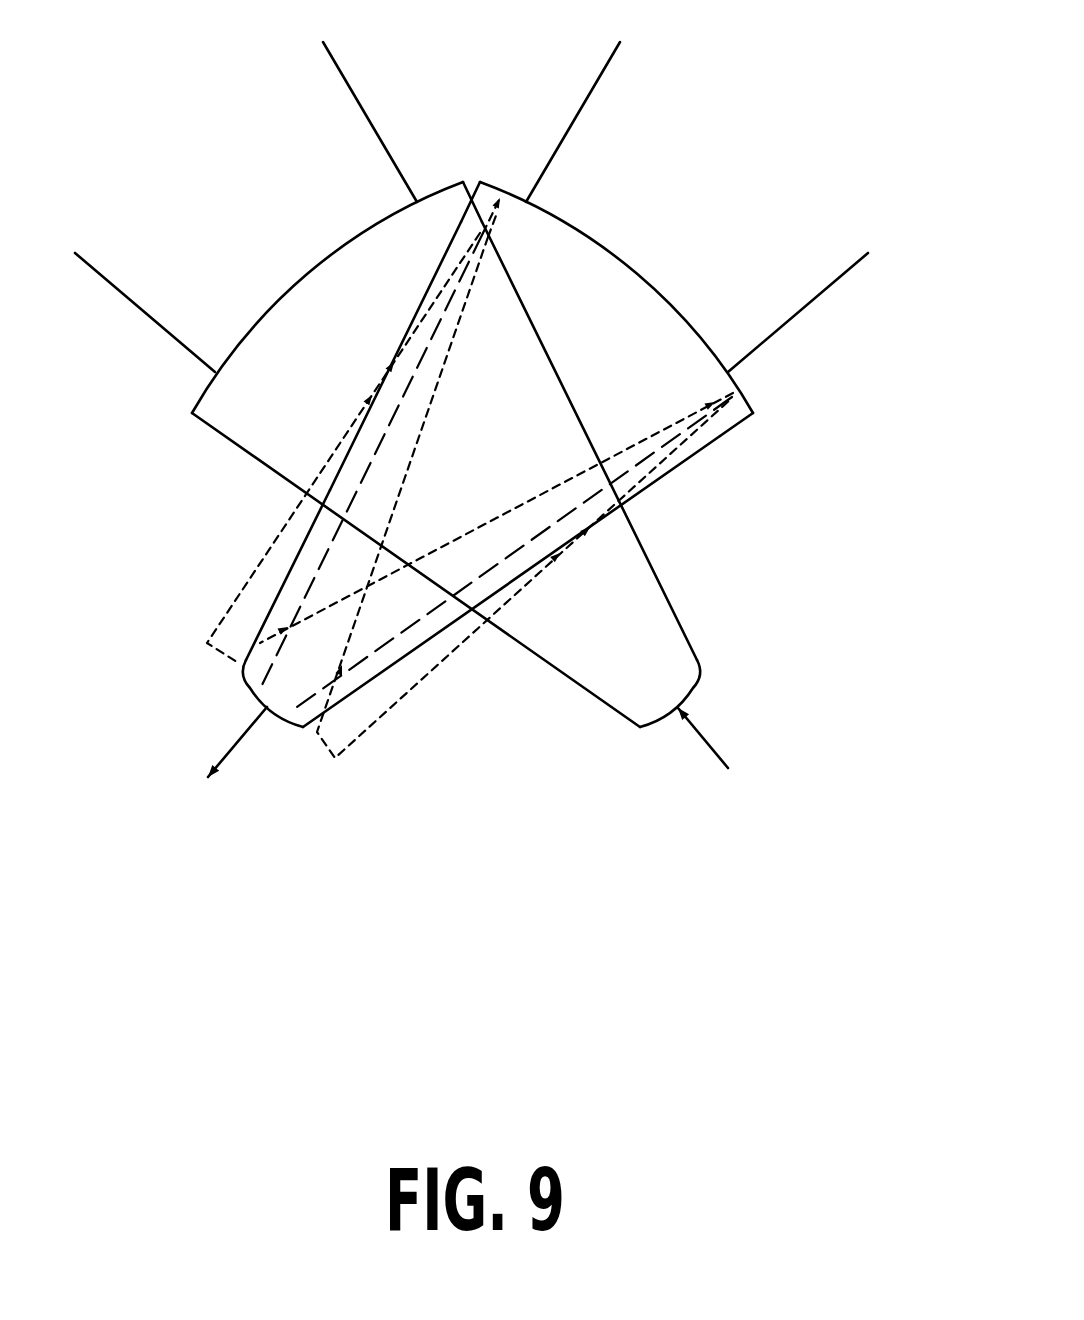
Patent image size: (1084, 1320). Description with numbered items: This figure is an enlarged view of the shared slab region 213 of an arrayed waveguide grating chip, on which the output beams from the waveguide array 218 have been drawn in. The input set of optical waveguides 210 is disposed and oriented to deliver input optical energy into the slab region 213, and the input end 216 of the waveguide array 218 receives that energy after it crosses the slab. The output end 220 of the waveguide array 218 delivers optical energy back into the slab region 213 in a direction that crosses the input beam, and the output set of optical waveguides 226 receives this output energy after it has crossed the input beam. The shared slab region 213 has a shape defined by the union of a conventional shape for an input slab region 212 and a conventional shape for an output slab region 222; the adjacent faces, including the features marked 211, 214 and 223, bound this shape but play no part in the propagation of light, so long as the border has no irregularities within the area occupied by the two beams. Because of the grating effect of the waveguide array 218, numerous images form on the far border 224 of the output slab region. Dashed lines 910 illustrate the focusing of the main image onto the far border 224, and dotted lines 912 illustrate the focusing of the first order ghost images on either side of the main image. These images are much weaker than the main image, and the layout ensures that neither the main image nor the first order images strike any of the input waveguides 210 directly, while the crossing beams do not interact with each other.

The input set of optical waveguides 210 is at (707, 738).
The input face of first lens element 211 is at (650, 728).
The input slab region 212 is at (677, 613).
The slab region 213 is at (473, 66).
The first lens element 214 is at (200, 396).
The input end of the waveguide array 216 is at (247, 320).
The waveguide array 218 is at (253, 106).
The output end of the waveguide array 220 is at (697, 320).
The output slab region 222 is at (250, 585).
The corner of second lens element 223 is at (737, 395).
The far border of the output slab region 224 is at (298, 727).
The output set of optical waveguides 226 is at (240, 738).
The dashed lines 910 is at (330, 543).
The dotted lines 912 is at (412, 468).